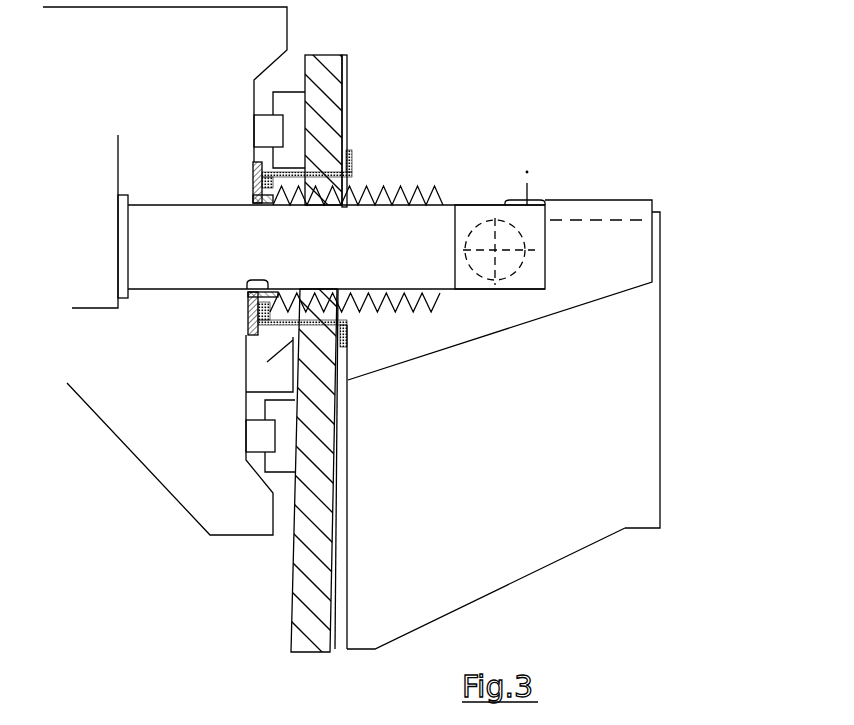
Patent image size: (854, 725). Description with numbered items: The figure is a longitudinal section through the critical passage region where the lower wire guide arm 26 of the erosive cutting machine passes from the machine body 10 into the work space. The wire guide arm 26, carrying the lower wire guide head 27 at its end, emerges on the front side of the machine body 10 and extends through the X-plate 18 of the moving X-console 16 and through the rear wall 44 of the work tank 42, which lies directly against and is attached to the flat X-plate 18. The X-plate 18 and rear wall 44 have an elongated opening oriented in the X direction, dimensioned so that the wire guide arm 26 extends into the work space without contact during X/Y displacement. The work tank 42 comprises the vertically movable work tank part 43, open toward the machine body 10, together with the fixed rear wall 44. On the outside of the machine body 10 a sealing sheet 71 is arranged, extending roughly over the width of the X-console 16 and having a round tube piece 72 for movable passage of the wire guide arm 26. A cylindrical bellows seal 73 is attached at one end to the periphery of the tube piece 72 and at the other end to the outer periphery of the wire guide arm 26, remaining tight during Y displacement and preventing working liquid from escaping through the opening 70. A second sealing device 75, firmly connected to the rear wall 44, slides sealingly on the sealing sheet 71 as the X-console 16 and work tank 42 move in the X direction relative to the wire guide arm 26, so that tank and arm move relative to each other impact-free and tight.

The machine body 10 is at (103, 80).
The console-like slide (X-console) 16 is at (578, 562).
The X-plate 18 is at (323, 66).
The lower wire guide arm 26 is at (157, 272).
The lower wire guide head 27 is at (530, 237).
The work tank 42 is at (660, 416).
The work tank part 43 is at (516, 479).
The rear wall 44 is at (348, 74).
The opening 70 is at (333, 186).
The sealing sheet 71 is at (253, 185).
The tube piece 72 is at (242, 288).
The bellows seal 73 is at (377, 312).
The second sealing device 75 is at (322, 172).